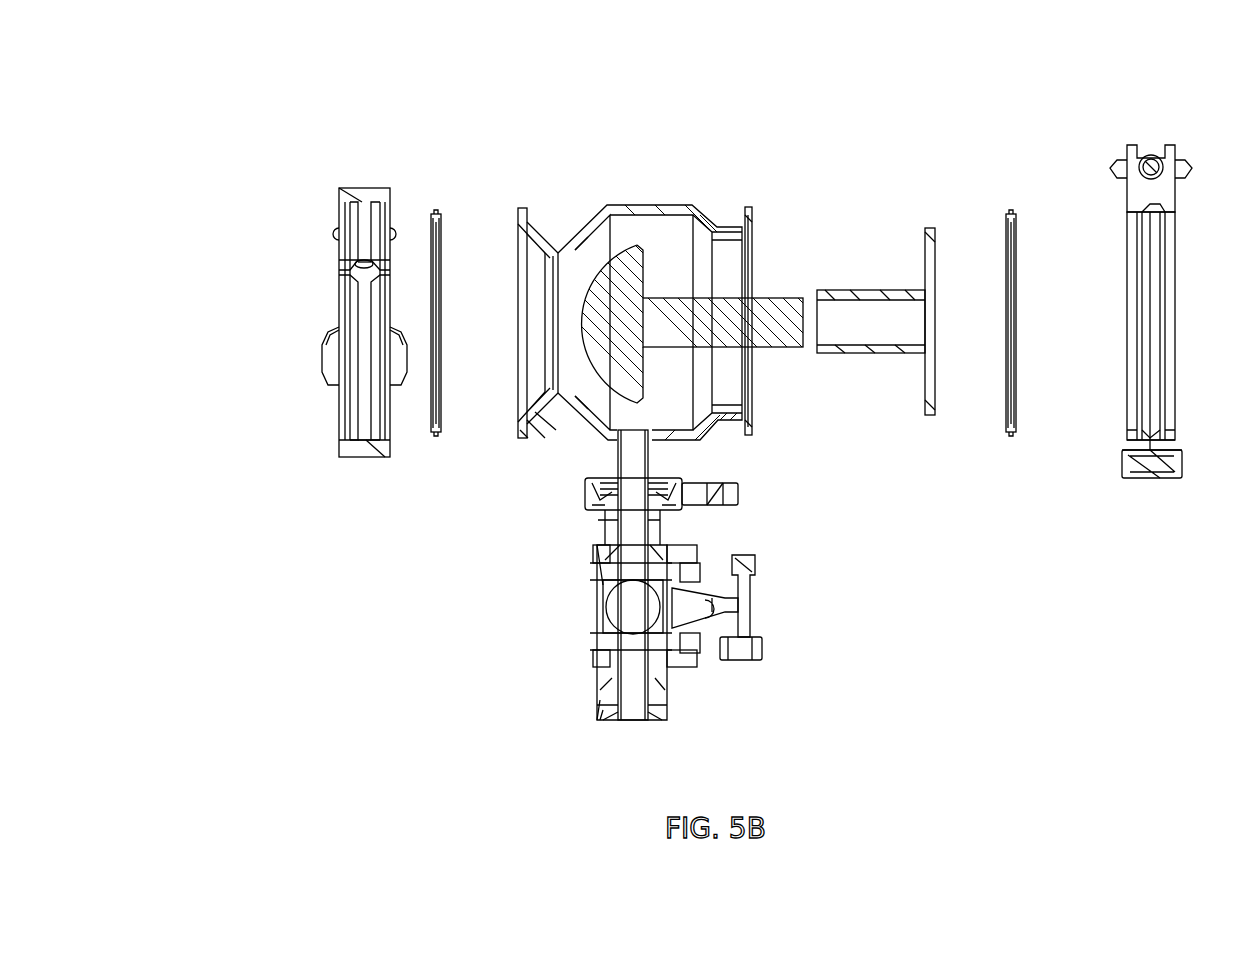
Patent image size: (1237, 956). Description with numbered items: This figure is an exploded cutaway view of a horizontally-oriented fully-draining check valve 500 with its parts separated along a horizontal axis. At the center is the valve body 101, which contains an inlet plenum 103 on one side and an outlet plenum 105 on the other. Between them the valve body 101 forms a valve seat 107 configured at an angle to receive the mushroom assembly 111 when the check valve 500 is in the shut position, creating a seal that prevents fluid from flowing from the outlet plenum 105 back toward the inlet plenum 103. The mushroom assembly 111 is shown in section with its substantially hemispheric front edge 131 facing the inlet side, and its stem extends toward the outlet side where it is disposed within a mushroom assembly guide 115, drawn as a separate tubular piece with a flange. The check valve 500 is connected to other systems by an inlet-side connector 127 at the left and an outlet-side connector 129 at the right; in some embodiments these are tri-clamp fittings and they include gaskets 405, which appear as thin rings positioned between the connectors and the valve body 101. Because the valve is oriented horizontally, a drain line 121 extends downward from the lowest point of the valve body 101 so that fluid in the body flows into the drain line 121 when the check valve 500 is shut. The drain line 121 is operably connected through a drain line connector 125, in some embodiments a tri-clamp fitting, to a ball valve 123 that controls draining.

The horizontally-oriented fully-draining check valve 500 is at (334, 138).
The valve body 101 is at (662, 200).
The inlet plenum 103 is at (528, 263).
The outlet plenum 105 is at (732, 277).
The valve seat 107 is at (590, 234).
The mushroom assembly 111 is at (709, 350).
The mushroom assembly guide 115 is at (933, 425).
The drain line 121 is at (610, 455).
The ball valve 123 is at (587, 610).
The drain line connector 125 is at (585, 510).
The inlet-side connector 127 is at (363, 462).
The outlet-side connector 129 is at (1128, 482).
The front edge 131 is at (583, 290).
The gaskets 405 is at (431, 438).